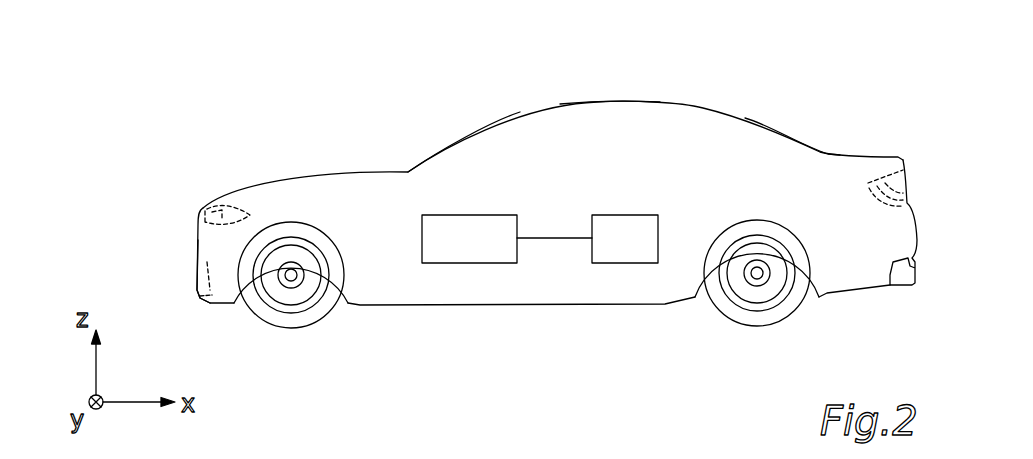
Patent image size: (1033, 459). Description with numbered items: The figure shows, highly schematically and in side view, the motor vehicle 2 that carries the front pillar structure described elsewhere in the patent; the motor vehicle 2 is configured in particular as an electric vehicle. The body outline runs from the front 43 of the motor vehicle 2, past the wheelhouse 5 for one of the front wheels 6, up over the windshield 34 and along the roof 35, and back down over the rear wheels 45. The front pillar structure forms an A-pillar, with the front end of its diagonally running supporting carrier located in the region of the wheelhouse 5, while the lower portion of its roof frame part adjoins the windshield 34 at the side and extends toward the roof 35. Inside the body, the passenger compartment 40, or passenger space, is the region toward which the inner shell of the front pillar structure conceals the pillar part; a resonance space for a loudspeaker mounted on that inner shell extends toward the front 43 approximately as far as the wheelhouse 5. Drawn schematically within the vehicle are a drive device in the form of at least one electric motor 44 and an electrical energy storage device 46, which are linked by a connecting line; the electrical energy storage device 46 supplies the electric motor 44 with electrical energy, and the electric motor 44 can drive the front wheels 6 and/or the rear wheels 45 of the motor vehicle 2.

The motor vehicle 2 is at (328, 143).
The wheelhouse 5 is at (330, 227).
The front wheels 6 is at (292, 292).
The windshield 34 is at (451, 142).
The roof 35 is at (597, 102).
The passenger compartment 40 is at (575, 187).
The front 43 is at (197, 252).
The electric motor 44 is at (625, 253).
The rear wheels 45 is at (757, 290).
The electrical energy storage device 46 is at (468, 253).